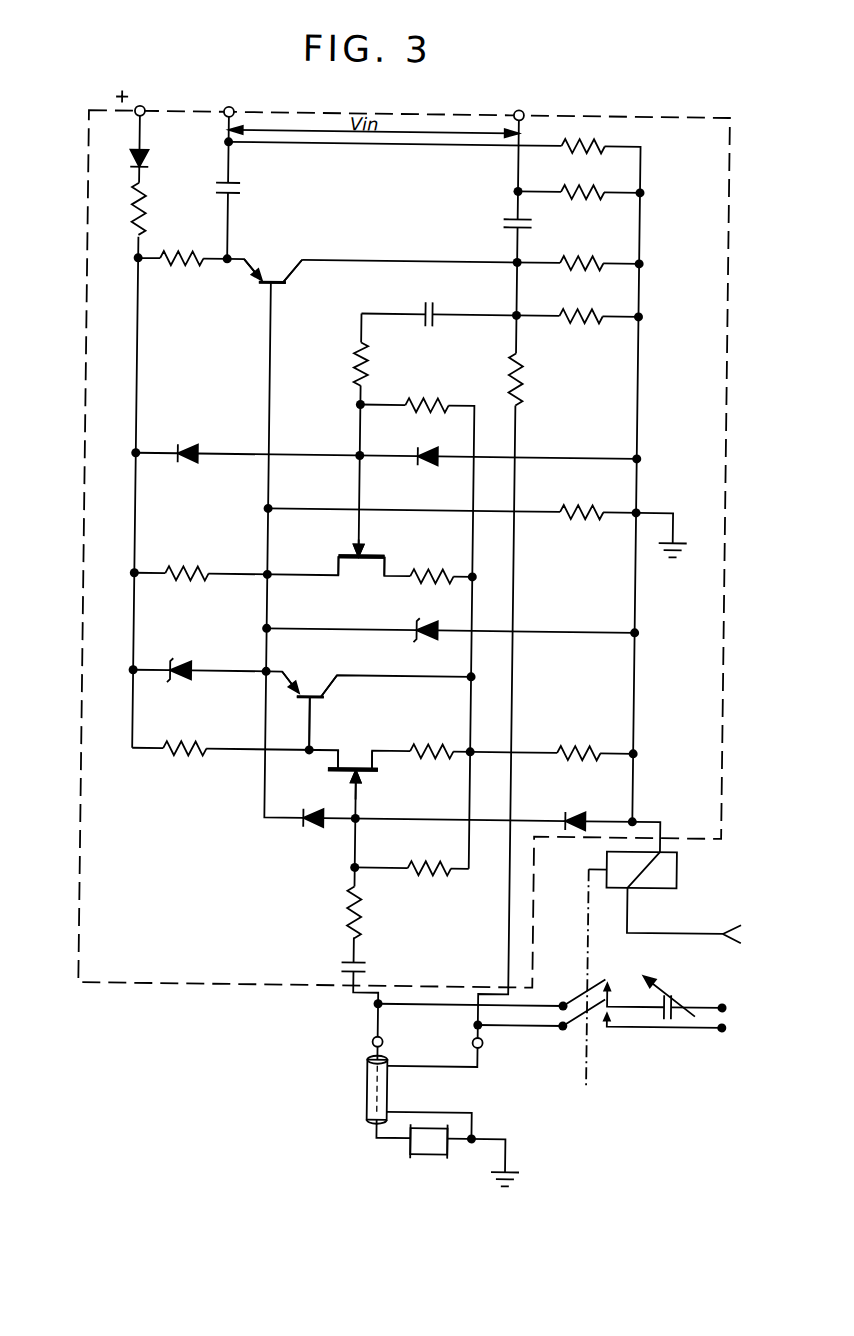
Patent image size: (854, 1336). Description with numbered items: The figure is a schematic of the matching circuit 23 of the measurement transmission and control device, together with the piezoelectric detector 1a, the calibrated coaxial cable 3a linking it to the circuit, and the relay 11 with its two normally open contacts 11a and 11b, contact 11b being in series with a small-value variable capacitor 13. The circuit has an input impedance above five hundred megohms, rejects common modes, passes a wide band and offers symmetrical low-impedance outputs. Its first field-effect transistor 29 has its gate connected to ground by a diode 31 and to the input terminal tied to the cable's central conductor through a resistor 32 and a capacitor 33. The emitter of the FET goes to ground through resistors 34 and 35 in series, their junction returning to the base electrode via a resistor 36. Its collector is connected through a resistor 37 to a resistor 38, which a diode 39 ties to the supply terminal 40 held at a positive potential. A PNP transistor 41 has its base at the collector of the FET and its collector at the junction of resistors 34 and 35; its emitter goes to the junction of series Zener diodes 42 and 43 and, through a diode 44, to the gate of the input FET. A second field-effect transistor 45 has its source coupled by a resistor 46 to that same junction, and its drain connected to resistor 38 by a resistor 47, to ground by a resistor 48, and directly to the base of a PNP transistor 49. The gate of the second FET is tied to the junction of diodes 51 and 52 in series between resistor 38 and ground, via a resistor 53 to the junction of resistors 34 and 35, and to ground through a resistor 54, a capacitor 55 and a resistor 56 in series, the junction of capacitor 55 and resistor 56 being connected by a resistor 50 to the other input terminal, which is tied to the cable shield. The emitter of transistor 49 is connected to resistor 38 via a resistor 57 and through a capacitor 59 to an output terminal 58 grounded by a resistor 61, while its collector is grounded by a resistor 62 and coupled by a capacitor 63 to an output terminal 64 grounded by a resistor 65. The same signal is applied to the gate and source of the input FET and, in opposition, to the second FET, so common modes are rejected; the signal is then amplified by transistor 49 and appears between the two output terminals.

The supply terminal 40 is at (137, 109).
The output terminal 58 is at (225, 109).
The output terminal 64 is at (521, 101).
The resistor 61 is at (584, 139).
The resistor 65 is at (585, 187).
The capacitor 63 is at (499, 220).
The resistor 62 is at (577, 258).
The diode 39 is at (144, 167).
The capacitor 59 is at (238, 192).
The resistor 38 is at (143, 215).
The resistor 57 is at (176, 268).
The PNP-type transistor 49 is at (272, 288).
The capacitor 55 is at (423, 302).
The resistor 56 is at (575, 310).
The resistor 54 is at (352, 362).
The resistor 53 is at (428, 400).
The resistor 50 is at (520, 380).
The diode 51 is at (190, 447).
The diode 52 is at (430, 448).
The matching circuit 23 is at (726, 375).
The resistor 48 is at (579, 508).
The resistor 47 is at (180, 572).
The resistor 46 is at (428, 572).
The second field-effect transistor 45 is at (348, 562).
The Zener diode 43 is at (424, 622).
The Zener diode 42 is at (186, 665).
The PNP-type transistor 41 is at (300, 702).
The resistor 37 is at (181, 748).
The resistor 34 is at (432, 748).
The resistor 35 is at (577, 747).
The first field-effect transistor 29 is at (375, 777).
The diode 31 is at (577, 810).
The diode 44 is at (316, 829).
The resistor 36 is at (432, 866).
The resistor 32 is at (355, 910).
The capacitor 33 is at (346, 962).
The relay 11 is at (680, 875).
The N/O contact 11b is at (578, 995).
The N/O contact 11a is at (577, 1033).
The variable capacitor 13 is at (668, 992).
The calibrated coaxial cable 3a is at (372, 1103).
The piezoelectric detector 1a is at (417, 1158).